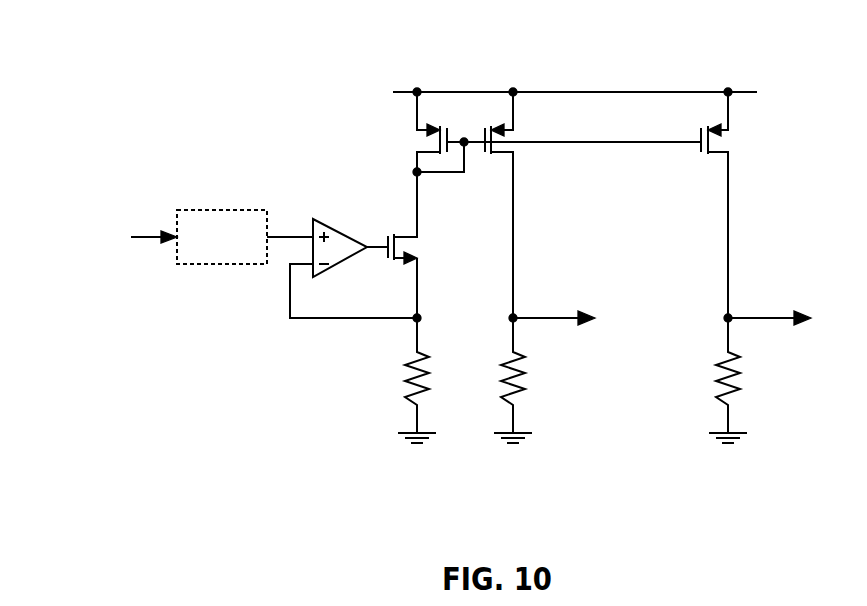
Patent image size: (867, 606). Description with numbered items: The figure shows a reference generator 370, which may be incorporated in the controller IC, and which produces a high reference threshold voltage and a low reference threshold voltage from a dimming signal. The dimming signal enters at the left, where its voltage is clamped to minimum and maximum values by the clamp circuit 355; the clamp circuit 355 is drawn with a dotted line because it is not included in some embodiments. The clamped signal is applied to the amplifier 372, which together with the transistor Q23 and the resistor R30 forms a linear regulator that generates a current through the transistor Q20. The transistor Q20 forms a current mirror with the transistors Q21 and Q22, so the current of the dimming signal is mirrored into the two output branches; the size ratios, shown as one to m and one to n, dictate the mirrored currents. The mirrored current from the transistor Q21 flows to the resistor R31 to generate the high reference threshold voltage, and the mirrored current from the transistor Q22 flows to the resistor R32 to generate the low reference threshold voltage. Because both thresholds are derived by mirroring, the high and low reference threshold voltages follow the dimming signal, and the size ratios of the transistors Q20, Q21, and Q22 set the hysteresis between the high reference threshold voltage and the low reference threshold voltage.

The reference generator 370 is at (274, 98).
The clamp circuit 355 is at (201, 210).
The amplifier 372 is at (347, 235).
The transistor Q20 is at (409, 134).
The transistor Q21 is at (525, 205).
The transistor Q22 is at (742, 205).
The transistor Q23 is at (426, 247).
The resistor R30 is at (394, 380).
The resistor R31 is at (534, 378).
The resistor R32 is at (747, 378).